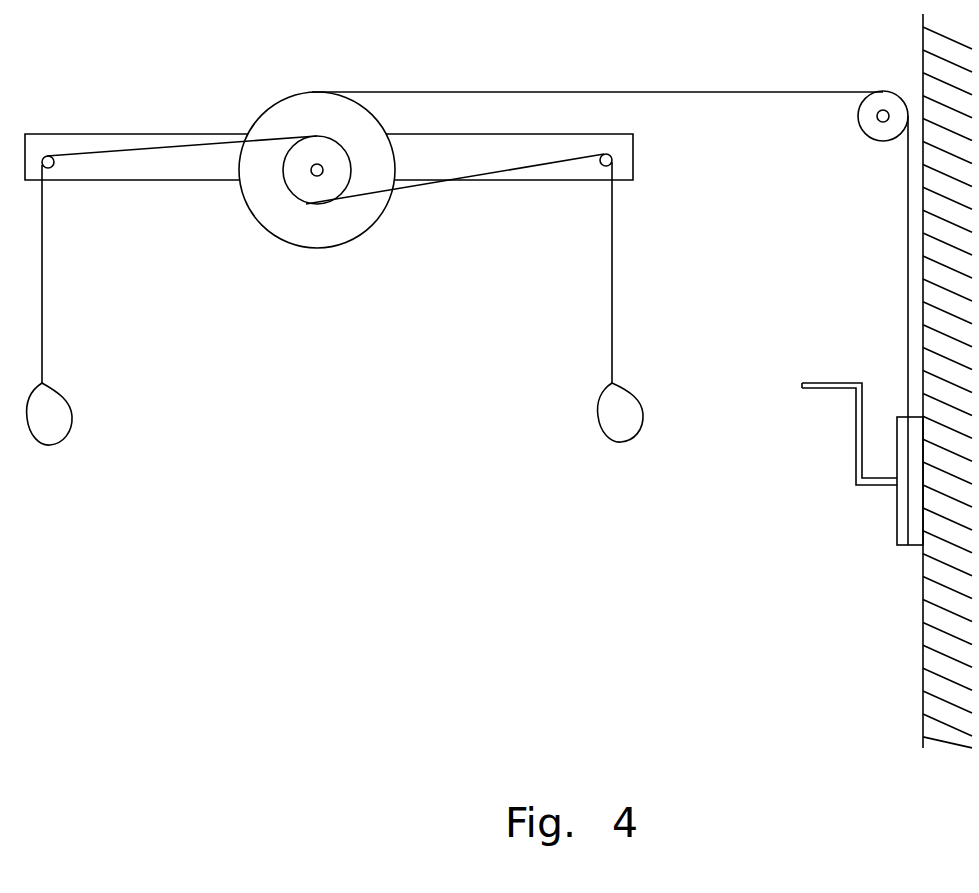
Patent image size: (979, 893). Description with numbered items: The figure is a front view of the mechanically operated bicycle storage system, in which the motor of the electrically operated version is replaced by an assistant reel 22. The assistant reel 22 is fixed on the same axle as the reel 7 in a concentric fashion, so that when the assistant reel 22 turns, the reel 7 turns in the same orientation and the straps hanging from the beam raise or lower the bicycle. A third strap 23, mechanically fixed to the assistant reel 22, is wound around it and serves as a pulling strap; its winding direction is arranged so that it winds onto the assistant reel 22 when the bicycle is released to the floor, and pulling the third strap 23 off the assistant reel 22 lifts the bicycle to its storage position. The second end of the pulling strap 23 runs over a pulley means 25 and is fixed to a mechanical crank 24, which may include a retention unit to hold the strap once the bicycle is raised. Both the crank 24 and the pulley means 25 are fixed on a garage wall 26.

The reel 7 is at (305, 183).
The assistant reel 22 is at (345, 220).
The third strap 23 is at (718, 92).
The mechanical crank 24 is at (857, 484).
The pulley means 25 is at (878, 130).
The garage wall 26 is at (943, 623).